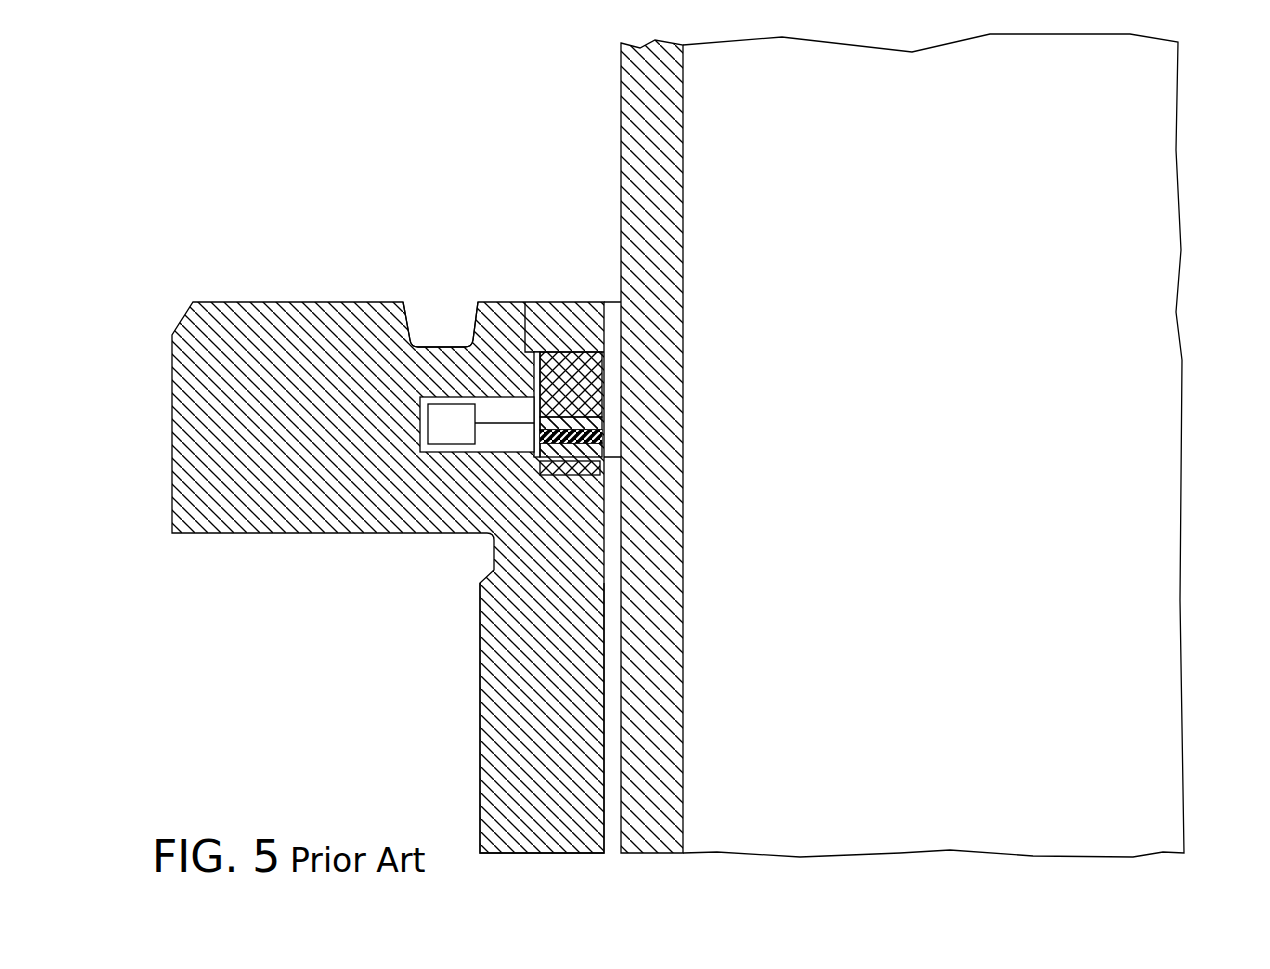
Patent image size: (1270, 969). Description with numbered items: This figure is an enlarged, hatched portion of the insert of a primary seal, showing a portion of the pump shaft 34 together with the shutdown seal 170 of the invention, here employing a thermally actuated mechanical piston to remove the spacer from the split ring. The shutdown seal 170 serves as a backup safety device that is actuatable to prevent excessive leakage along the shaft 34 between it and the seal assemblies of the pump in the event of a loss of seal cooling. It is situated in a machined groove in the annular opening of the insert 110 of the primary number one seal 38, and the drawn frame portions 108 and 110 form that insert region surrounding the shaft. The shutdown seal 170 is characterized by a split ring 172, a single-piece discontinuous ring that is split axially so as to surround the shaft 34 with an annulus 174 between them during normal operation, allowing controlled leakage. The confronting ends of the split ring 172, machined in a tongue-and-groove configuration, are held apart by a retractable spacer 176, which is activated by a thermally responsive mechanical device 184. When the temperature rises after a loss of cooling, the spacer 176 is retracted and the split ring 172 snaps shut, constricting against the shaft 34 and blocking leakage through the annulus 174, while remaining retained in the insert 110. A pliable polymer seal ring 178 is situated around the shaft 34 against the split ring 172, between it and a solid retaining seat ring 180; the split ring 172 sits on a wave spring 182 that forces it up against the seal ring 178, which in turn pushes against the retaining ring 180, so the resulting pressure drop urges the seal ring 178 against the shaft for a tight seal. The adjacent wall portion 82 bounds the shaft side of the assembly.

The shaft 34 is at (1160, 140).
The wall panel 82 is at (621, 120).
The primary number 1 seal 38 is at (423, 630).
The lower frame member 108 is at (480, 815).
The insert 110 is at (313, 520).
The shutdown seal 170 is at (551, 292).
The split ring 172 is at (537, 460).
The annulus 174 is at (615, 302).
The spacer 176 is at (535, 437).
The pliable polymer seal ring 178 is at (552, 382).
The retaining seat ring 180 is at (540, 305).
The wave spring 182 is at (575, 476).
The thermally responsive mechanical device 184 is at (422, 393).